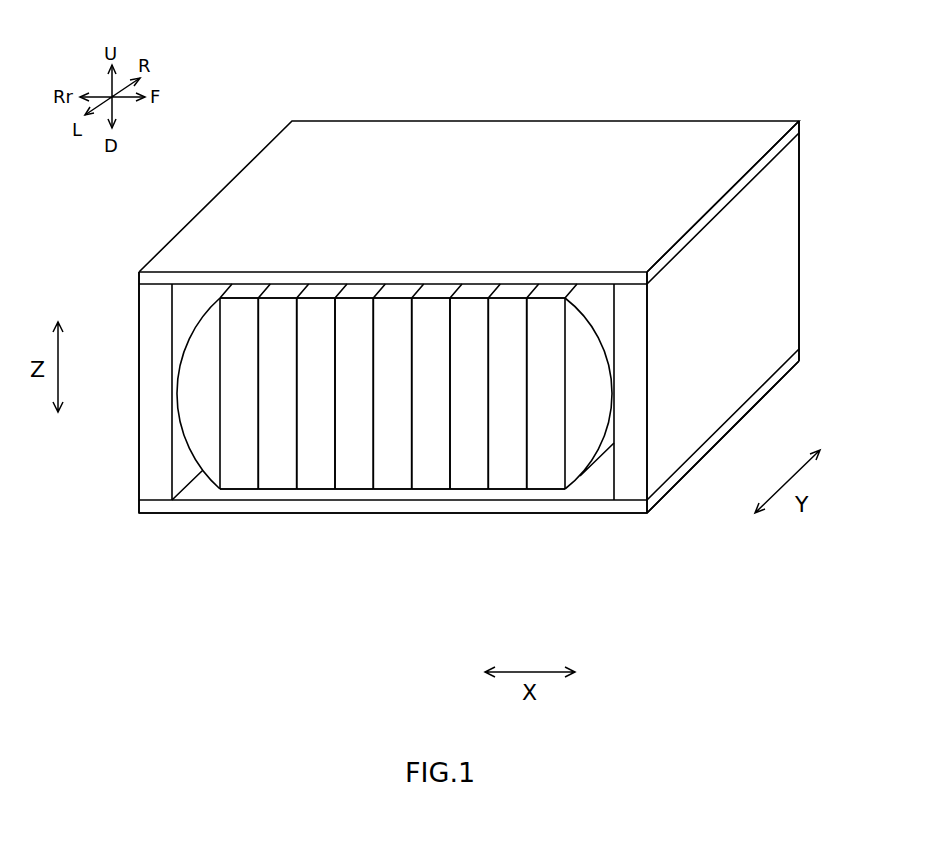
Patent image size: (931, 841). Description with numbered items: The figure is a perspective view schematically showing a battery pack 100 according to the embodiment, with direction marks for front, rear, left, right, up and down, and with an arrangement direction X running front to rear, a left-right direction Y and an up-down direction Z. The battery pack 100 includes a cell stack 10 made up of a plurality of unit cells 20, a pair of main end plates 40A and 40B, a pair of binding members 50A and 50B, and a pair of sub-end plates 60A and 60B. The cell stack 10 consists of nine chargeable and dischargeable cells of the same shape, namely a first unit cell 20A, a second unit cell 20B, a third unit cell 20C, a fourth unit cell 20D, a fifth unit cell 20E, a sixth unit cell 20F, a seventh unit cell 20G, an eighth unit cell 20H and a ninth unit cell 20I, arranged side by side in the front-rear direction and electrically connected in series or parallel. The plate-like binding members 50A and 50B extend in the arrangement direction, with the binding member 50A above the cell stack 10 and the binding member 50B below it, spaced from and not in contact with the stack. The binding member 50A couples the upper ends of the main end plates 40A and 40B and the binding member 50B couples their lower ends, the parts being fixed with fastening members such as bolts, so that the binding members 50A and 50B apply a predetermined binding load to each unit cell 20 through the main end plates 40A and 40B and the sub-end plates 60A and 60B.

The battery pack 100 is at (741, 90).
The cell stack 10 is at (214, 497).
The unit cell 20 is at (398, 291).
The first unit cell 20A is at (242, 483).
The second unit cell 20B is at (277, 483).
The third unit cell 20C is at (317, 483).
The fourth unit cell 20D is at (355, 483).
The fifth unit cell 20E is at (395, 483).
The sixth unit cell 20F is at (432, 483).
The seventh unit cell 20G is at (470, 483).
The eighth unit cell 20H is at (508, 483).
The ninth unit cell 20I is at (547, 483).
The main end plate 40A is at (145, 463).
The main end plate 40B is at (747, 377).
The binding member 50A is at (268, 175).
The binding member 50B is at (153, 510).
The sub-end plate 60A is at (190, 312).
The sub-end plate 60B is at (581, 488).